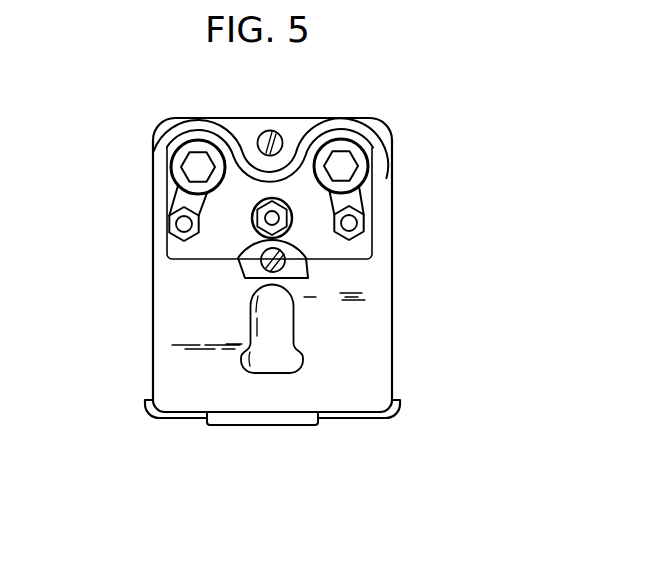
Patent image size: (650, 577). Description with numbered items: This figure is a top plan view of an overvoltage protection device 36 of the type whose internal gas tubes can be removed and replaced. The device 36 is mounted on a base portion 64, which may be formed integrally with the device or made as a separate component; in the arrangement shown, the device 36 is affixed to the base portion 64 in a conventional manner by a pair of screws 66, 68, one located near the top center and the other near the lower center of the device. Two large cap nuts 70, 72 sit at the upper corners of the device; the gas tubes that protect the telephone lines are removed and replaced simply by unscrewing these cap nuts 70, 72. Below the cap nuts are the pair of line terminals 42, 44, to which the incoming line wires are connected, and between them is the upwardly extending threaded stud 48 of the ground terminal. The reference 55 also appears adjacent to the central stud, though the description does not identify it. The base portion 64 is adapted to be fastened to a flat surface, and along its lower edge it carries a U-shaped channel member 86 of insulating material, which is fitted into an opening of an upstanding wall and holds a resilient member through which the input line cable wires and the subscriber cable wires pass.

The overvoltage protection device 36 is at (346, 127).
The line terminal 42 is at (176, 223).
The line terminal 44 is at (354, 218).
The threaded stud 48 is at (172, 276).
The nut opening 55 is at (262, 243).
The base portion 64 is at (372, 297).
The screw 66 is at (268, 130).
The screw 68 is at (286, 257).
The cap nut 70 is at (345, 163).
The cap nut 72 is at (192, 165).
The U-shaped channel member 86 is at (222, 421).